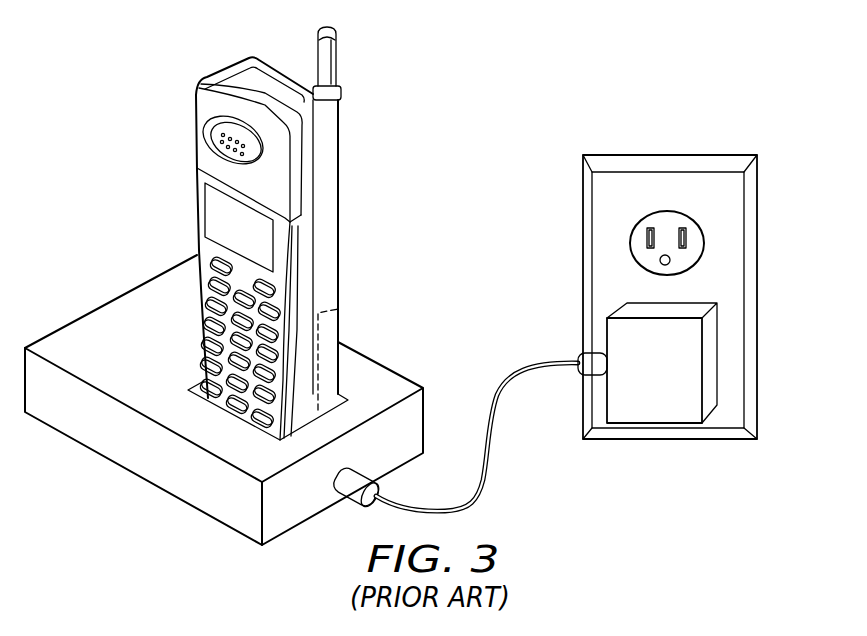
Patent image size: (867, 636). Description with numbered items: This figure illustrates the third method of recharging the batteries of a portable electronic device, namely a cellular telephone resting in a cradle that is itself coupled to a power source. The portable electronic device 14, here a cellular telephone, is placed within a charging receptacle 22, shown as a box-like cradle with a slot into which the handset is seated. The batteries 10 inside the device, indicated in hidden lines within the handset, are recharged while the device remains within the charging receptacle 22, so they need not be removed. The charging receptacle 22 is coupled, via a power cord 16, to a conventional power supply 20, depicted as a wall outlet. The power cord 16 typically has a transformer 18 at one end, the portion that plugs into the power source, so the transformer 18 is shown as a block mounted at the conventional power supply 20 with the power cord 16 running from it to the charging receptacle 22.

The batteries 10 is at (331, 327).
The portable electronic device 14 is at (240, 68).
The power cord 16 is at (522, 373).
The transformer 18 is at (670, 381).
The conventional power supply 20 is at (693, 239).
The charging receptacle 22 is at (110, 310).